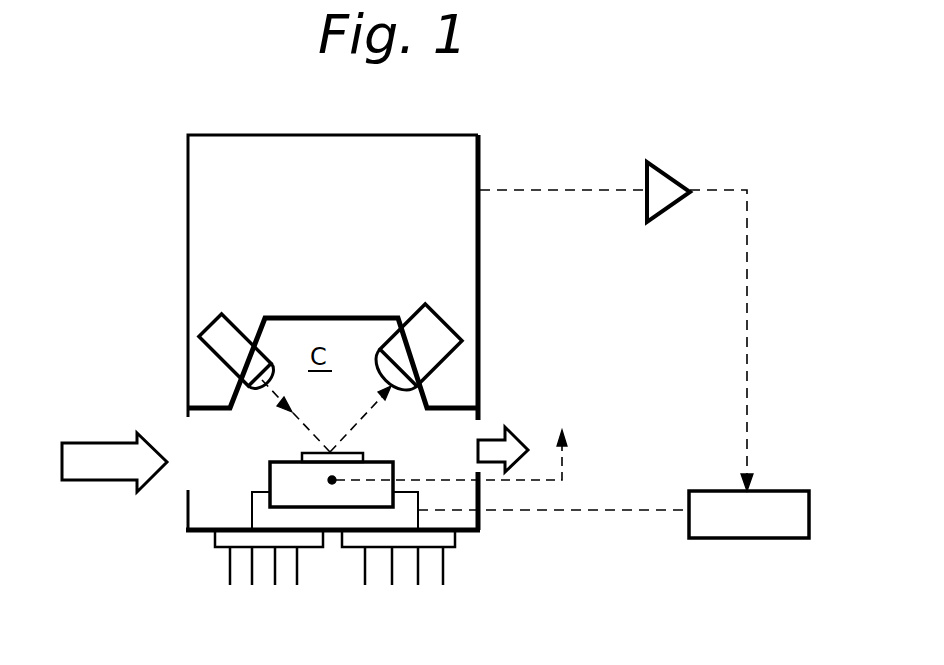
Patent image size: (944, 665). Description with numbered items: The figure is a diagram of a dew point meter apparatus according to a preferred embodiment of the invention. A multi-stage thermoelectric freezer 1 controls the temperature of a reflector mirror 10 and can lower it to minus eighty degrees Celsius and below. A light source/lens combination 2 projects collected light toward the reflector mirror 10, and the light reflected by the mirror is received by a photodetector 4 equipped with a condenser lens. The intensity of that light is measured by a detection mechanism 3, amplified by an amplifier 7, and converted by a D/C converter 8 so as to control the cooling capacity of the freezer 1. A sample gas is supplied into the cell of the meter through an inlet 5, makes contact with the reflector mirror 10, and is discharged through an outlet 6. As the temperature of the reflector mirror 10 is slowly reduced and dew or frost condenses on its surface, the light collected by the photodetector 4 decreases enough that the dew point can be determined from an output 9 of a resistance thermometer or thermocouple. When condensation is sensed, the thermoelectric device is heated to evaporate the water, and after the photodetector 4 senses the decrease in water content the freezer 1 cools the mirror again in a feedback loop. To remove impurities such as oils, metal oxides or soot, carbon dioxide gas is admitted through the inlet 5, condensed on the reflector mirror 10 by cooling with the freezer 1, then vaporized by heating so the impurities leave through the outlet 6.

The multi-stage thermoelectric freezer 1 is at (375, 497).
The light source/lens combination 2 is at (236, 318).
The detection mechanism 3 is at (218, 186).
The photodetector 4 is at (443, 305).
The inlet 5 is at (102, 462).
The outlet 6 is at (514, 449).
The amplifier 7 is at (668, 172).
The D/C converter 8 is at (760, 530).
The output 9 is at (453, 438).
The reflector mirror 10 is at (332, 482).